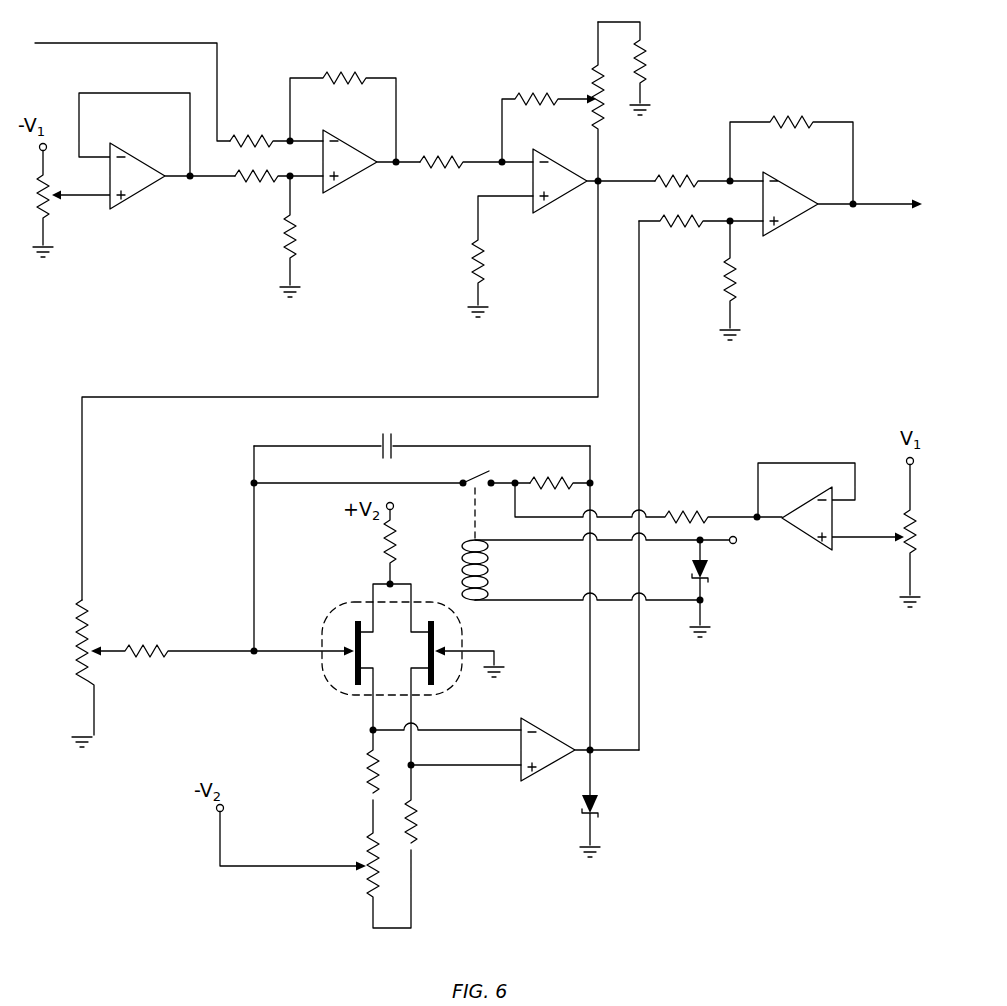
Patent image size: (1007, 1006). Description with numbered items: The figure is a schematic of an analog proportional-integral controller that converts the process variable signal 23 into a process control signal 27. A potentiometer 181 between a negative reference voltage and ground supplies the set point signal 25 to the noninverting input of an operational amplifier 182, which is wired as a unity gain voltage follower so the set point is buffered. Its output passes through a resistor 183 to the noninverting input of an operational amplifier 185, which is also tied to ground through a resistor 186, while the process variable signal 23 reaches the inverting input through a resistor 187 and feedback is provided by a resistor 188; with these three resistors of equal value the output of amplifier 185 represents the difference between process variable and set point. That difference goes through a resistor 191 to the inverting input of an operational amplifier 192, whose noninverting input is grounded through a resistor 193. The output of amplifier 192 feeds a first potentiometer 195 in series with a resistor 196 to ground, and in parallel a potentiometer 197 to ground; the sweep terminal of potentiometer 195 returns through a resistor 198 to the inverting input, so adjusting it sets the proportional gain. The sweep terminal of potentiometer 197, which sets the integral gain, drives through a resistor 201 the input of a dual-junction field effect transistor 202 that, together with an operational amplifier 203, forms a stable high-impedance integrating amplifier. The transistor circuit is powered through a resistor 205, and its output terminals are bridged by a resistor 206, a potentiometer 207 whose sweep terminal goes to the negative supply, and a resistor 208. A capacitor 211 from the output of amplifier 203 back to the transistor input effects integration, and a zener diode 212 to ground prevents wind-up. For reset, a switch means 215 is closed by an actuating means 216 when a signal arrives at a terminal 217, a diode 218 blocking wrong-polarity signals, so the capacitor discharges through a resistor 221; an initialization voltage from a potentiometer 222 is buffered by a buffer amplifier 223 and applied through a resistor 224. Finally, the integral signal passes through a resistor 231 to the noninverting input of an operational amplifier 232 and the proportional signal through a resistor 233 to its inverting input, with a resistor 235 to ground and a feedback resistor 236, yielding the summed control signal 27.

The process variable signal 23 is at (105, 43).
The set point signal 25 is at (203, 182).
The process control signal 27 is at (878, 203).
The potentiometer 181 is at (49, 214).
The operational amplifier 182 is at (118, 145).
The resistor 183 is at (252, 184).
The operational amplifier 185 is at (332, 135).
The resistor 186 is at (284, 235).
The resistor 187 is at (236, 138).
The resistor 188 is at (349, 78).
The resistor 191 is at (434, 158).
The operational amplifier 192 is at (541, 159).
The resistor 193 is at (484, 262).
The first potentiometer 195 is at (589, 78).
The resistor 196 is at (647, 61).
The potentiometer 197 is at (86, 617).
The resistor 198 is at (555, 107).
The resistor 201 is at (146, 651).
The dual-junction field effect transistor 202 is at (464, 640).
The operational amplifier 203 is at (526, 718).
The resistor 205 is at (384, 546).
The resistor 206 is at (360, 790).
The potentiometer 207 is at (306, 875).
The resistor 208 is at (433, 830).
The capacitor 211 is at (397, 440).
The zener diode 212 is at (605, 805).
The switch means 215 is at (472, 473).
The actuating means 216 is at (489, 563).
The terminal 217 is at (739, 542).
The diode 218 is at (710, 570).
The resistor 221 is at (551, 481).
The potentiometer 222 is at (902, 567).
The buffer amplifier 223 is at (836, 547).
The resistor 224 is at (672, 516).
The resistor 231 is at (688, 231).
The operational amplifier 232 is at (783, 188).
The resistor 233 is at (691, 177).
The resistor 235 is at (745, 274).
The resistor 236 is at (790, 121).